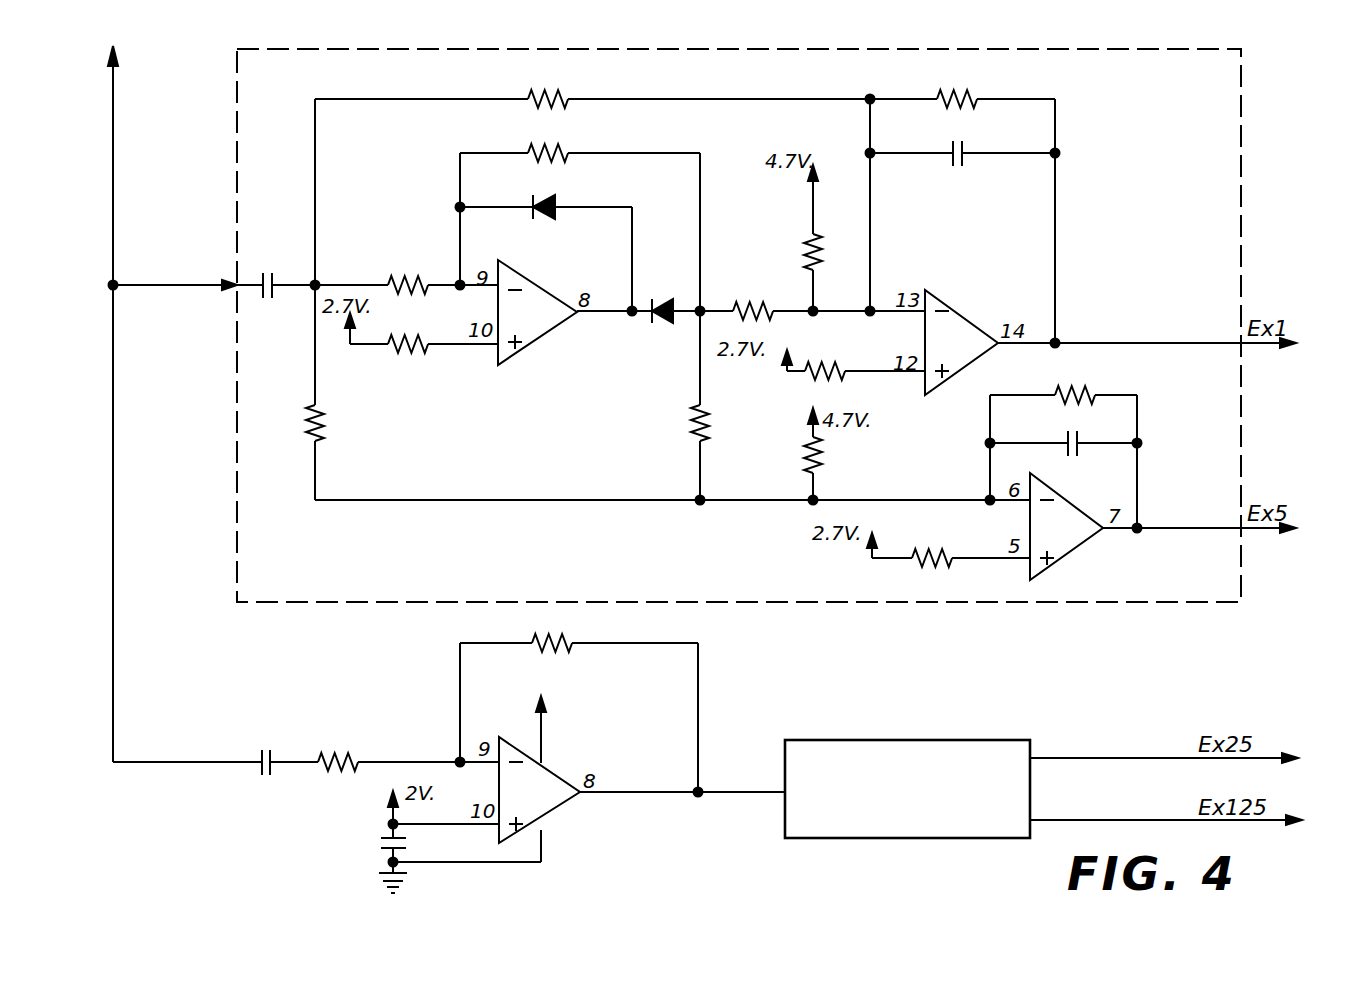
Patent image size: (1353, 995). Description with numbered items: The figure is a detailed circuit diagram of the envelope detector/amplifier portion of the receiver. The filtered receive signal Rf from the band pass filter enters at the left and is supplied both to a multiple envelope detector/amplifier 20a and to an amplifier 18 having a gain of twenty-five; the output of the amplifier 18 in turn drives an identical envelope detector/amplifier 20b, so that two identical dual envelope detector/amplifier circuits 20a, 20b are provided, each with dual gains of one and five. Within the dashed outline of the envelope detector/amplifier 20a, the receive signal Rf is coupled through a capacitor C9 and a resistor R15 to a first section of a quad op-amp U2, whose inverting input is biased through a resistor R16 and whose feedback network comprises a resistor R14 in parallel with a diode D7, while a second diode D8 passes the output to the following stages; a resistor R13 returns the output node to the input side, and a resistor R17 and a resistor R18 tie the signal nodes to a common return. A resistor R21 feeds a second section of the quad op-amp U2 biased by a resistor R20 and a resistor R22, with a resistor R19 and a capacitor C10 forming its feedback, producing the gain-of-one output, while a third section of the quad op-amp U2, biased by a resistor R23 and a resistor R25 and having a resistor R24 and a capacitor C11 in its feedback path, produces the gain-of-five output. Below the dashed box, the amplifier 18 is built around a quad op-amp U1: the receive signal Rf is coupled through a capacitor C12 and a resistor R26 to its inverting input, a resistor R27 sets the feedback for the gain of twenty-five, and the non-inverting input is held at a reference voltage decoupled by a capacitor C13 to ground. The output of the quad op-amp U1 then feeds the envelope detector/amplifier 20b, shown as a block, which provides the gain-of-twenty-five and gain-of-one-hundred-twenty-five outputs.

The multiple envelope detector/amplifier 20a is at (1243, 60).
The envelope detector/amplifier 20b is at (1017, 740).
The amplifier 18 is at (586, 848).
The filtered receive signal Rf is at (115, 88).
The capacitor C9 is at (276, 275).
The capacitor C10 is at (962, 142).
The capacitor C11 is at (1063, 433).
The capacitor C12 is at (280, 749).
The capacitor C13 is at (369, 848).
The resistor R13 is at (592, 86).
The resistor R14 is at (580, 141).
The resistor R15 is at (406, 272).
The resistor R16 is at (424, 330).
The resistor R17 is at (339, 299).
The resistor R18 is at (665, 326).
The resistor R19 is at (962, 86).
The resistor R20 is at (784, 238).
The resistor R21 is at (812, 299).
The resistor R22 is at (856, 358).
The resistor R23 is at (784, 454).
The resistor R24 is at (1063, 383).
The resistor R25 is at (951, 543).
The resistor R26 is at (408, 747).
The resistor R27 is at (579, 631).
The diode D7 is at (546, 245).
The diode D8 is at (676, 297).
The quad op-amp IC U1 is at (539, 779).
The quad op-amp IC U2 is at (800, 420).